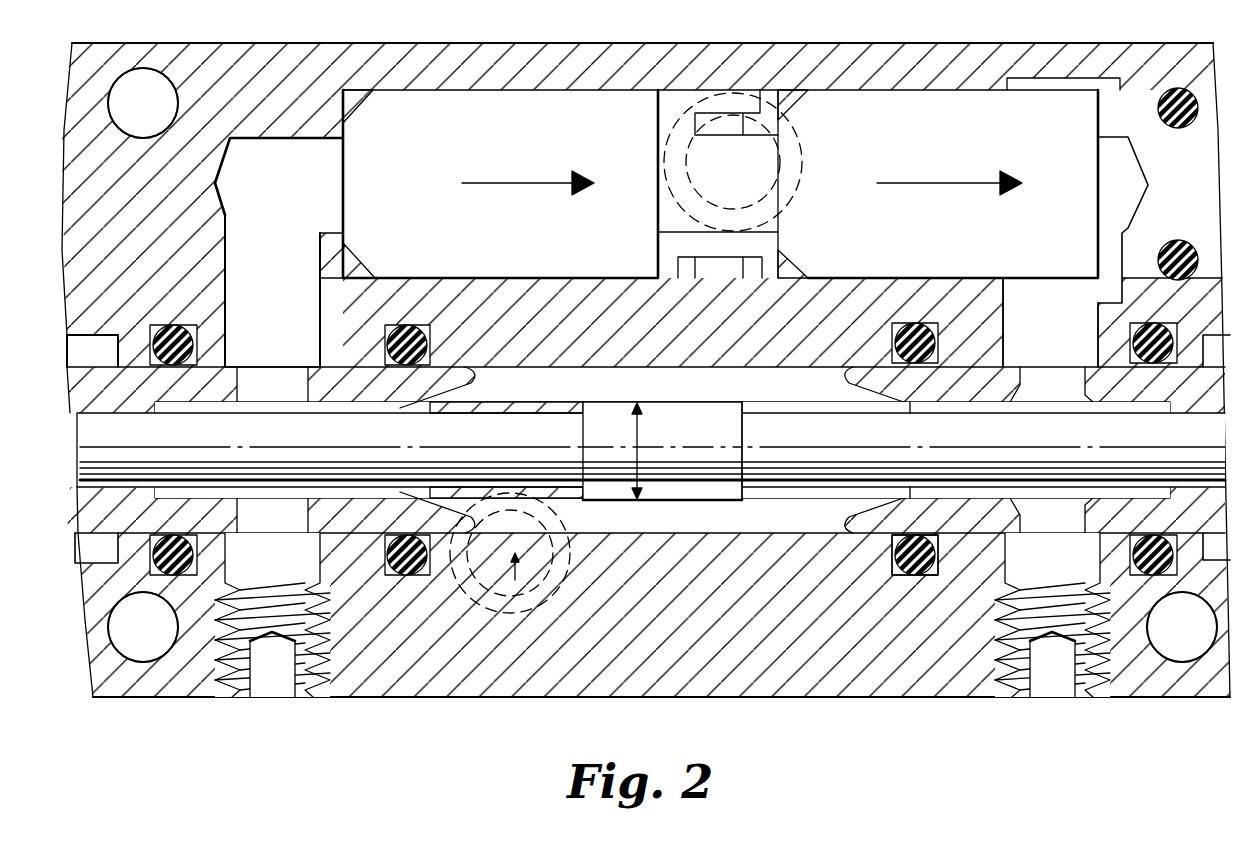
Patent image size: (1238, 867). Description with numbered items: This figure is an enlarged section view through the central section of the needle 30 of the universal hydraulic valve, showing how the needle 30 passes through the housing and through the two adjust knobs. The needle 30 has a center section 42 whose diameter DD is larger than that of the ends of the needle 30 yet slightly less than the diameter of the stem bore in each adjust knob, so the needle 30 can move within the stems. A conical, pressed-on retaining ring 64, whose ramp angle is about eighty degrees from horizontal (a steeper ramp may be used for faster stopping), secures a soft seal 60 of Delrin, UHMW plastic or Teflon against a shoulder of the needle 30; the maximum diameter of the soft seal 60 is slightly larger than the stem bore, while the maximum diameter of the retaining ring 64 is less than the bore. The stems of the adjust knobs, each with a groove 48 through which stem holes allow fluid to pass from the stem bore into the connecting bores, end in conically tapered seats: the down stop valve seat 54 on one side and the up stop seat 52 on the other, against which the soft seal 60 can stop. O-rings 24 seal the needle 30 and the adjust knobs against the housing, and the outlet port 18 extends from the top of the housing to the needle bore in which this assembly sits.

The outlet port 18 is at (530, 600).
The O-rings 24 is at (887, 551).
The needle 30 is at (680, 412).
The center section 42 is at (718, 423).
The groove 48 is at (285, 365).
The up stop seat 52 is at (972, 378).
The down stop valve seat 54 is at (472, 374).
The soft seal 60 is at (528, 400).
The retaining ring 64 is at (407, 413).